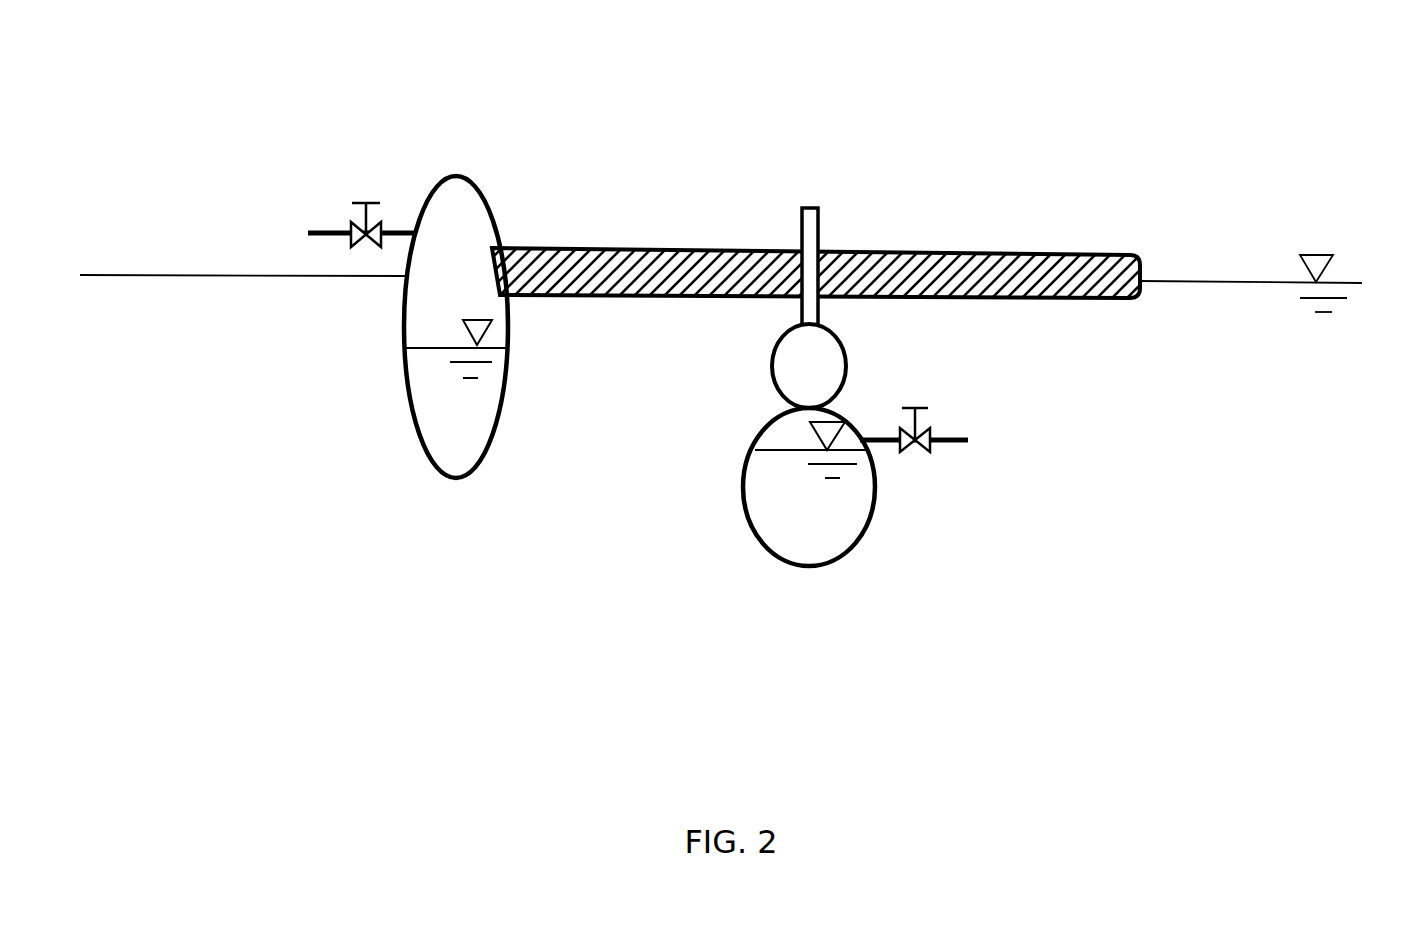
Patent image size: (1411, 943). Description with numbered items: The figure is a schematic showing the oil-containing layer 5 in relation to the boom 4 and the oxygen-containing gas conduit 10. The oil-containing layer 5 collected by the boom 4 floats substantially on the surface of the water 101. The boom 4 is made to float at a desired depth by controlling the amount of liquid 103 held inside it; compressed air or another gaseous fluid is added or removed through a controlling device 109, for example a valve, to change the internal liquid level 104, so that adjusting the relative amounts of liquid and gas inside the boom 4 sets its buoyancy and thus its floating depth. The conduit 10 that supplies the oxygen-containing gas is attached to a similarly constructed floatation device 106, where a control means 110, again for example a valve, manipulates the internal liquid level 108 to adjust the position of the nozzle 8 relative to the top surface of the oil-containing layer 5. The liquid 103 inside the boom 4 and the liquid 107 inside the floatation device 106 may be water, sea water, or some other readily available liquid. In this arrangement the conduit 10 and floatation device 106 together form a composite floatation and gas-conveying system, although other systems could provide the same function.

The boom 4 is at (386, 255).
The oil-containing layer 5 is at (932, 270).
The nozzle 8 is at (802, 210).
The conduit 10 is at (840, 361).
The water 101 is at (1198, 338).
The liquid 103 is at (447, 423).
The internal liquid level 104 is at (437, 347).
The floatation device 106 is at (808, 542).
The liquid 107 is at (788, 510).
The internal liquid level 108 is at (775, 448).
The controlling device 109 is at (348, 192).
The control means 110 is at (942, 457).